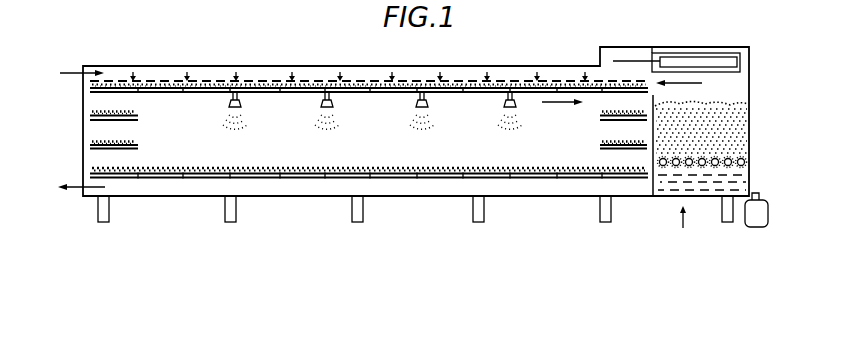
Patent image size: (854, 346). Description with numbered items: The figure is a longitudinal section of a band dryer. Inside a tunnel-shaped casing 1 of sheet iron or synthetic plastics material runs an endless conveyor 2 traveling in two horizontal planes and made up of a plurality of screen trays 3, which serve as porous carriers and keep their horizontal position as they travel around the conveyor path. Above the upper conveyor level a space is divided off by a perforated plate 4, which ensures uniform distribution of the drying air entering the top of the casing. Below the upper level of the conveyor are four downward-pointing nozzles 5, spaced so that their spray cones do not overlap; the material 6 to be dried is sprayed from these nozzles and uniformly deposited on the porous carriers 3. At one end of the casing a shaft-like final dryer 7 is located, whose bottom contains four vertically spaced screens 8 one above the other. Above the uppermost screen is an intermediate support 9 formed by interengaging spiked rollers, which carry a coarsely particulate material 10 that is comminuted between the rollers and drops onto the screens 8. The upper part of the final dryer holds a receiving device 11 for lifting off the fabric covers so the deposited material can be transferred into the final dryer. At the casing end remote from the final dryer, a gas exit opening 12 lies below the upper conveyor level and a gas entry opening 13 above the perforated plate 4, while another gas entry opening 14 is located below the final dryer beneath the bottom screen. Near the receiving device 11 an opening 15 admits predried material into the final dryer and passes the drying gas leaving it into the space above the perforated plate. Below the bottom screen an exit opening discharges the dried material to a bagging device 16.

The tunnel-shaped casing 1 is at (207, 198).
The endless conveyor 2 is at (158, 184).
The screen trays 3 is at (172, 93).
The perforated plate 4 is at (206, 80).
The nozzles 5 is at (241, 103).
The material to be dried 6 is at (293, 167).
The final dryer 7 is at (753, 143).
The screens 8 is at (720, 188).
The intermediate support 9 is at (750, 166).
The coarsely particulate material 10 is at (720, 117).
The receiving device 11 is at (740, 70).
The gas exit opening 12 is at (79, 174).
The gas entry opening 13 is at (79, 62).
The gas entry opening 14 is at (686, 231).
The opening 15 is at (693, 86).
The bagging device 16 is at (759, 196).